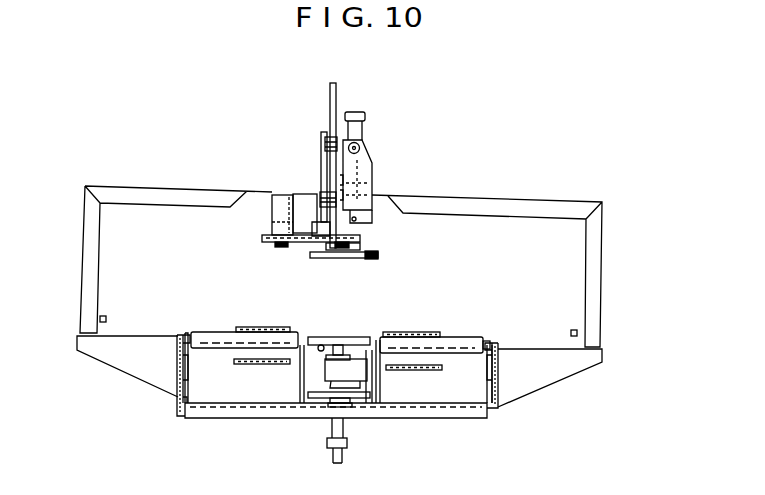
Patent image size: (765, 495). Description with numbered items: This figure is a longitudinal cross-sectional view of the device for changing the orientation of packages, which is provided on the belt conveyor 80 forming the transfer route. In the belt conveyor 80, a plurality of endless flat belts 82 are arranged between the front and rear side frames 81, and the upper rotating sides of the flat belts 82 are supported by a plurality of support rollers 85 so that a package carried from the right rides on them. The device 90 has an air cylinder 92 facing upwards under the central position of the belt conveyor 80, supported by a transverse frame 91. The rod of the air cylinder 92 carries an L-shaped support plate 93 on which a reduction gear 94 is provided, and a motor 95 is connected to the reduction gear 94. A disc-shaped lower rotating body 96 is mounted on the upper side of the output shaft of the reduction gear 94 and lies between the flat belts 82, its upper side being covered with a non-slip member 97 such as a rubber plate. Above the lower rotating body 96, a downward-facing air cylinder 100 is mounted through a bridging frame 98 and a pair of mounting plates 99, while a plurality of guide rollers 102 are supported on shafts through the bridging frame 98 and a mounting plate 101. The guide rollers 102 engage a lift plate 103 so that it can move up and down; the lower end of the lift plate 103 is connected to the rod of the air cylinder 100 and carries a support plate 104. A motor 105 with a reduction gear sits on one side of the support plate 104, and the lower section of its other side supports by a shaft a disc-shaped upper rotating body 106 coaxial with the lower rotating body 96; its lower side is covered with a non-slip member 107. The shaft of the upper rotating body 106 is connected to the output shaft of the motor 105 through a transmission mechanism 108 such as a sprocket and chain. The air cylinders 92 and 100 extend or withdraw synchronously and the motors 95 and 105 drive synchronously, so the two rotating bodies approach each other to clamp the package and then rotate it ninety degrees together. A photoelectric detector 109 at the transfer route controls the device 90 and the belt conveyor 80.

The belt conveyor 80 is at (190, 266).
The side frames 81 is at (178, 370).
The flat belts 82 is at (262, 330).
The support rollers 85 is at (212, 331).
The device for changing the orientation of a package 90 is at (440, 125).
The transverse frame 91 is at (229, 412).
The air cylinder 92 is at (331, 428).
The support plate 93 is at (362, 404).
The reduction gear 94 is at (325, 372).
The motor 95 is at (370, 389).
The lower rotating body 96 is at (318, 337).
The non-slip member 97 is at (332, 338).
The bridging frame 98 is at (189, 191).
The mounting plates 99 is at (373, 172).
The air cylinder 100 is at (366, 116).
The mounting plate 101 is at (321, 150).
The guide rollers 102 is at (328, 140).
The lift plate 103 is at (337, 90).
The support plate 104 is at (262, 238).
The motor with reduction gear 105 is at (263, 194).
The upper rotating body 106 is at (362, 246).
The non-slip member 107 is at (373, 258).
The transmission mechanism 108 is at (284, 246).
The photoelectric detector 109 is at (100, 318).